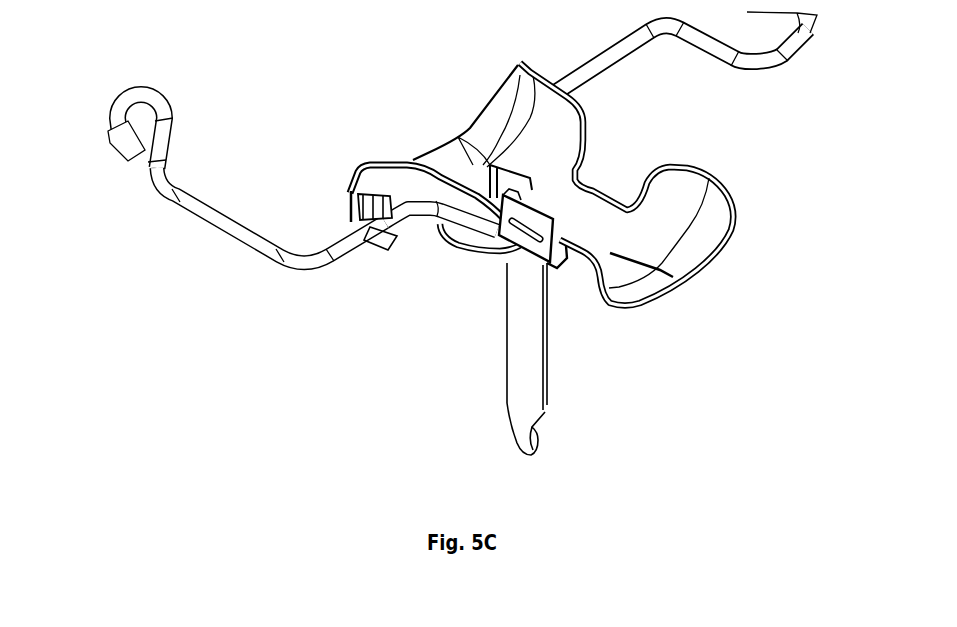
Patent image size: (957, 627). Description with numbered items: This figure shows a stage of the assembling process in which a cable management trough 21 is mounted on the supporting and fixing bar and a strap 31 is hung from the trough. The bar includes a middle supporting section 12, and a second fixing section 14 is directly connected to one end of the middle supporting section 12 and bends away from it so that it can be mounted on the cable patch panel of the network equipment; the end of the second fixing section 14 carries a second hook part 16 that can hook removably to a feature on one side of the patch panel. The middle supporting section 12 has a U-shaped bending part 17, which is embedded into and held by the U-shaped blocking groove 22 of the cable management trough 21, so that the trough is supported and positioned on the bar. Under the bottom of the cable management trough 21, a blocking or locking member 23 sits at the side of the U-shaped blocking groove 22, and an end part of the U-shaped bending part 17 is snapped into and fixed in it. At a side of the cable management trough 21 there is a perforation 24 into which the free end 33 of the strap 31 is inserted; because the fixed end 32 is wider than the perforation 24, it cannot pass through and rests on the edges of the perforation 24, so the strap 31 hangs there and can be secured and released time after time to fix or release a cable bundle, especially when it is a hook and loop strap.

The middle supporting section 12 is at (613, 53).
The second fixing section 14 is at (245, 230).
The second hook part 16 is at (120, 131).
The U-shaped bending part 17 is at (460, 222).
The cable management trough 21 is at (660, 228).
The U-shaped blocking groove 22 is at (450, 240).
The blocking or locking member 23 is at (370, 247).
The perforation 24 is at (547, 270).
The strap 31 is at (525, 365).
The fixed end 32 is at (590, 187).
The free end 33 is at (520, 432).